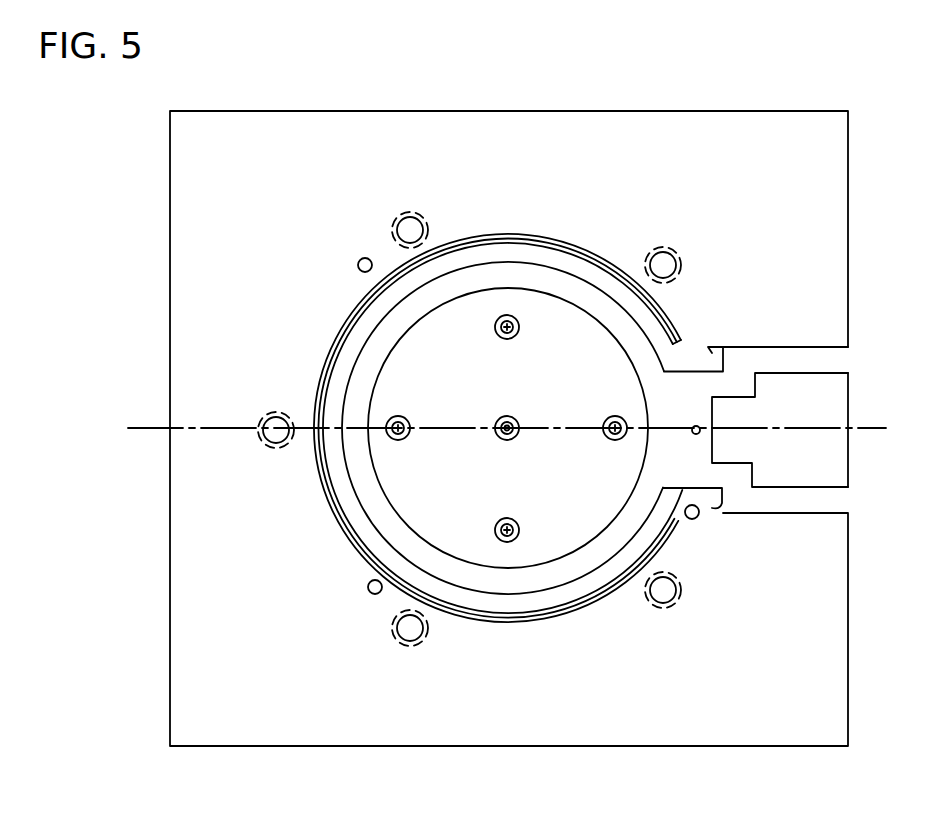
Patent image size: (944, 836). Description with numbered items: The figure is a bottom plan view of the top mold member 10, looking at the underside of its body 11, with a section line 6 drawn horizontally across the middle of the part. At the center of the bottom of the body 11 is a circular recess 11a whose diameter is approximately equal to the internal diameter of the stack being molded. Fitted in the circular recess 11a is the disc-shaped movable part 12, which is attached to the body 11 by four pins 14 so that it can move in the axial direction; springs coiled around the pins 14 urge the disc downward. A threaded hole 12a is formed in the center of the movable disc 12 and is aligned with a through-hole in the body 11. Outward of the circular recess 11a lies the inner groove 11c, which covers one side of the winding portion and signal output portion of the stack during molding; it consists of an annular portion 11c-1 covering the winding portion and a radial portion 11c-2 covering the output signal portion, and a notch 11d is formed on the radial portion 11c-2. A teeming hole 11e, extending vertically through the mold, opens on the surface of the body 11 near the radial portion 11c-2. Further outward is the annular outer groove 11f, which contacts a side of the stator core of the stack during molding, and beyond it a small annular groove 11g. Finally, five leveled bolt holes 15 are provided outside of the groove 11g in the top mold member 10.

The section line VI-VI 6 is at (140, 420).
The top mold member 10 is at (774, 104).
The body 11 is at (497, 746).
The circular recess 11a is at (385, 483).
The inner groove 11c is at (355, 382).
The annular portion 11c-1 is at (588, 560).
The radial portion 11c-2 is at (693, 392).
The notch 11d is at (820, 468).
The teeming hole 11e is at (694, 436).
The outer groove 11f is at (337, 482).
The small annular groove 11g is at (337, 513).
The movable part 12 is at (545, 550).
The threaded hole 12a is at (518, 422).
The pins 14 is at (520, 322).
The leveled bolt holes 15 is at (409, 222).